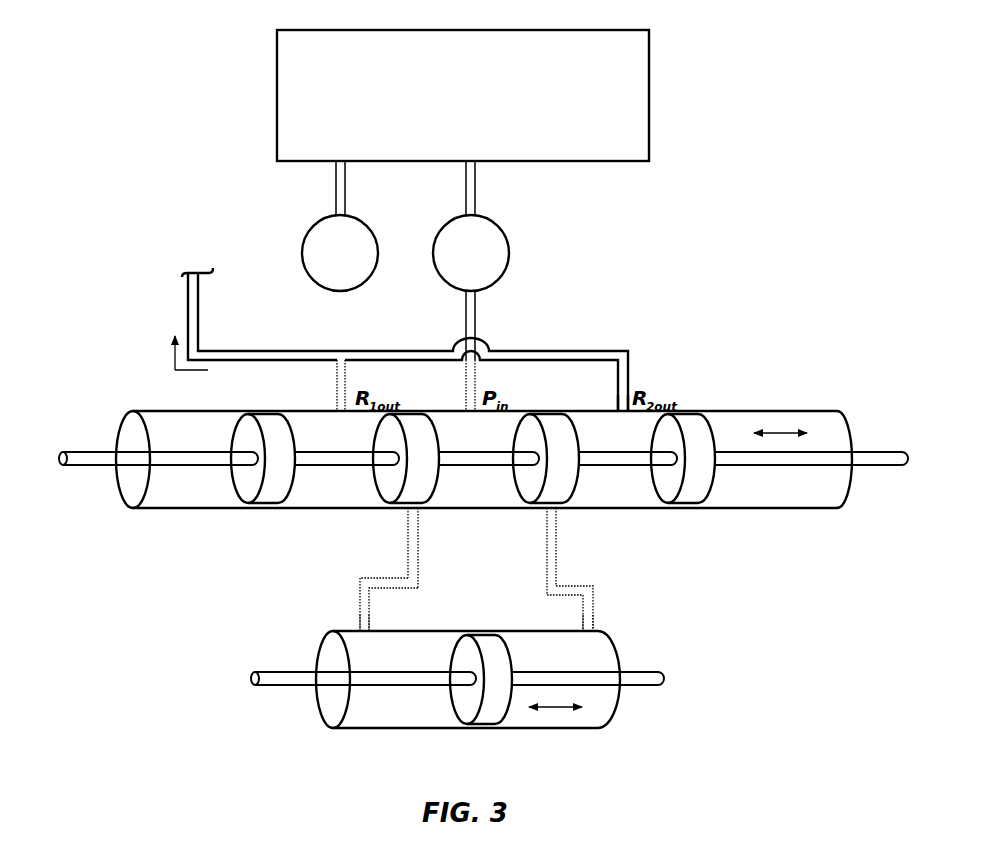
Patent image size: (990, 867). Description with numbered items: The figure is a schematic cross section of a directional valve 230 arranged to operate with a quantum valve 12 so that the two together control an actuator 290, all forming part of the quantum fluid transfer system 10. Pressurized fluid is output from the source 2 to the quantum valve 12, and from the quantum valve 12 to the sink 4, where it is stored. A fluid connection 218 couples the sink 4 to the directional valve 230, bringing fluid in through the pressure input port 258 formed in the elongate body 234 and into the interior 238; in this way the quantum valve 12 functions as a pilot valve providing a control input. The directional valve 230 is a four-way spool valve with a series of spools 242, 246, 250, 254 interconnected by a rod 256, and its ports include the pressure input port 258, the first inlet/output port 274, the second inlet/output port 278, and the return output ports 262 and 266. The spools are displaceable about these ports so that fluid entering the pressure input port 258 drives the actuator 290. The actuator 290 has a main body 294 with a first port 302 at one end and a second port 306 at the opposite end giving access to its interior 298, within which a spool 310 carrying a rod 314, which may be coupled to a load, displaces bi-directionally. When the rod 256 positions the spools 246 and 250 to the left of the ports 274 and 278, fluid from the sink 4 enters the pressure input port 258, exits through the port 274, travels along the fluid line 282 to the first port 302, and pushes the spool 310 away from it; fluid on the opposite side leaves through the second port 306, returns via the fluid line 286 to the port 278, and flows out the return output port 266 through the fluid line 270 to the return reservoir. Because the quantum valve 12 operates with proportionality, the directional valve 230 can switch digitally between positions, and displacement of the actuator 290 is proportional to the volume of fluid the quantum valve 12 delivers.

The quantum valve 12 is at (657, 72).
The quantum fluid transfer system 10 is at (821, 221).
The source 2 is at (350, 280).
The sink 4 is at (483, 277).
The fluid connection 218 is at (477, 318).
The fluid line 270 is at (263, 352).
The return output port 262 is at (334, 411).
The pressure input port 258 is at (464, 411).
The return output port 266 is at (616, 410).
The directional valve 230 is at (776, 404).
The elongate body 234 is at (176, 427).
The interior 238 is at (178, 490).
The spool 242 is at (267, 495).
The spool 246 is at (422, 490).
The spool 250 is at (557, 487).
The spool 254 is at (693, 490).
The rod 256 is at (872, 460).
The first inlet/output port 274 is at (406, 511).
The second inlet/output port 278 is at (553, 522).
The fluid line 282 is at (412, 577).
The fluid line 286 is at (545, 572).
The actuator 290 is at (623, 647).
The main body 294 is at (365, 717).
The interior 298 is at (403, 708).
The first port 302 is at (366, 637).
The second port 306 is at (590, 637).
The spool 310 is at (488, 710).
The rod 314 is at (417, 680).